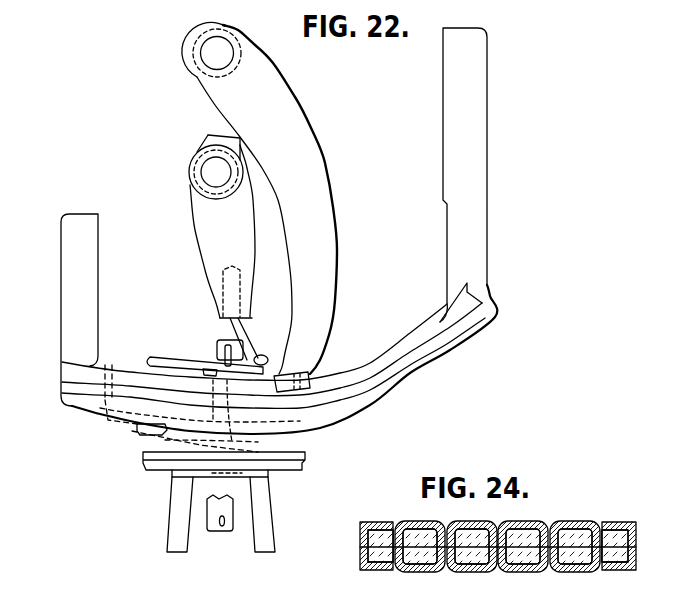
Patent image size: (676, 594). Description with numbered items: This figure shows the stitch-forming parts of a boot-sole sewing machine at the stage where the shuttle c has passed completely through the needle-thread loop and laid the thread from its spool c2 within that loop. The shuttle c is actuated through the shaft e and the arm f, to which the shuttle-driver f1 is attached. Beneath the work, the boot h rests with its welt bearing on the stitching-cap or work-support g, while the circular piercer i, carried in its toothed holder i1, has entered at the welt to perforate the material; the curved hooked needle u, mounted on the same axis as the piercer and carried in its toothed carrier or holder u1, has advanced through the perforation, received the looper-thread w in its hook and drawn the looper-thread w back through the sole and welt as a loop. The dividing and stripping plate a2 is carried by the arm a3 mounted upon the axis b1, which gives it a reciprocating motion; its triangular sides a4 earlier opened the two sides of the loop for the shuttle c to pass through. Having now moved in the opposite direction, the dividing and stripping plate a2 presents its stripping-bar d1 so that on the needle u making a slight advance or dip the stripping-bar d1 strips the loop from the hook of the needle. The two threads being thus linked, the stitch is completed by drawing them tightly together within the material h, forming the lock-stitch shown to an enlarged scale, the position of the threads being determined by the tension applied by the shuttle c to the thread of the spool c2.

In FIG. 22, the shuttle c is at (103, 370).
In FIG. 22, the spool c2 is at (150, 437).
In FIG. 22, the shaft e is at (211, 49).
In FIG. 22, the arm f is at (267, 199).
In FIG. 22, the shuttle-driver f1 is at (310, 369).
In FIG. 22, the axis b1 is at (216, 172).
In FIG. 22, the arm a3 is at (222, 226).
In FIG. 22, the dividing and stripping plate a2 is at (263, 356).
In FIG. 22, the triangular sides a4 is at (173, 360).
In FIG. 22, the curved hooked needle u is at (218, 343).
In FIG. 22, the carrier or holder u1 is at (223, 338).
In FIG. 22, the stripping-bar d1 is at (210, 369).
In FIG. 22, the looper-thread w is at (219, 440).
In FIG. 22, the boot h is at (300, 452).
In FIG. 24, the boot h is at (361, 540).
In FIG. 22, the stitching-cap or work-support g is at (268, 477).
In FIG. 22, the circular piercer i is at (222, 526).
In FIG. 22, the holder i1 is at (220, 513).